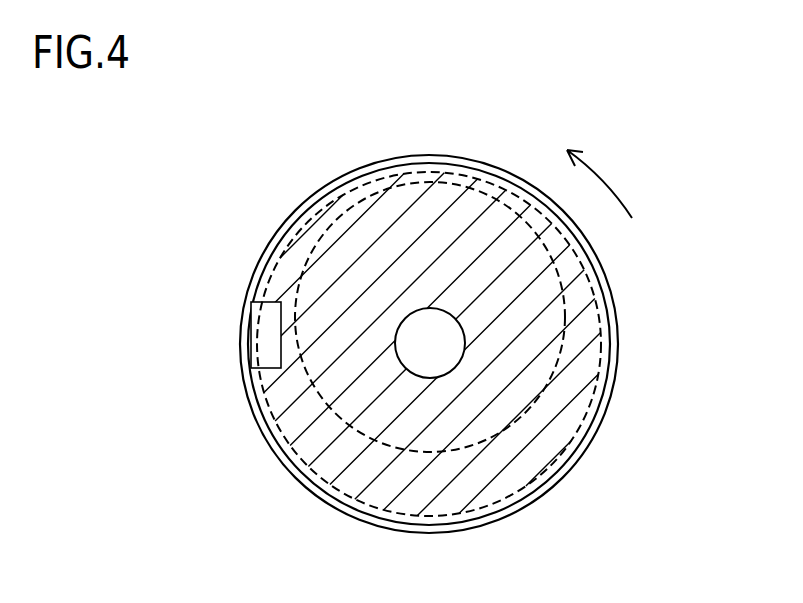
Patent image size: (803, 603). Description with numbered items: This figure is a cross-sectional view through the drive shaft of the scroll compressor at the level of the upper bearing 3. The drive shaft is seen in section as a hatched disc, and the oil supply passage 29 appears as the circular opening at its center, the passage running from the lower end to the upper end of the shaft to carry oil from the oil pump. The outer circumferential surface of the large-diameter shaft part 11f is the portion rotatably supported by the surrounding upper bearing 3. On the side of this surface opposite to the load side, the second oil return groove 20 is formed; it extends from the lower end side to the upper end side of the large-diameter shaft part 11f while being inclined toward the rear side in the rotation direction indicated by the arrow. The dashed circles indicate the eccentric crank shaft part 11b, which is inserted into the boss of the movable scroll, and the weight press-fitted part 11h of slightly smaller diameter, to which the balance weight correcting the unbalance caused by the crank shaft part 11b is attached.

The upper bearing 3 is at (326, 184).
The large-diameter shaft part 11f is at (457, 172).
The crank shaft part 11b is at (315, 247).
The weight press-fitted part 11h is at (598, 276).
The second oil return groove 20 is at (263, 363).
The oil supply passage 29 is at (399, 354).